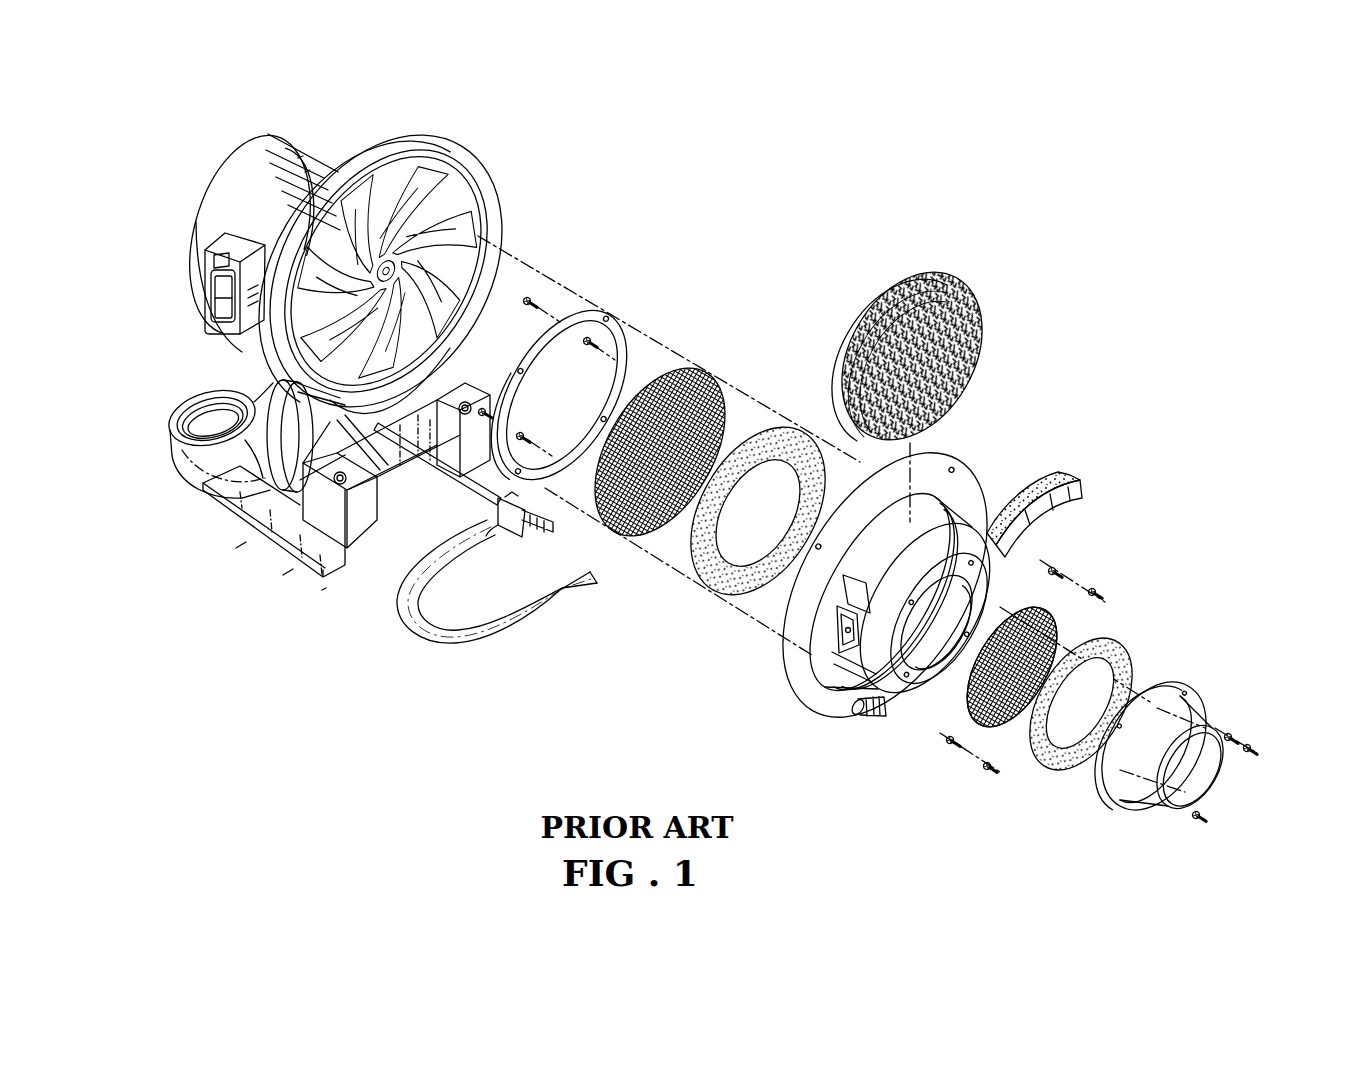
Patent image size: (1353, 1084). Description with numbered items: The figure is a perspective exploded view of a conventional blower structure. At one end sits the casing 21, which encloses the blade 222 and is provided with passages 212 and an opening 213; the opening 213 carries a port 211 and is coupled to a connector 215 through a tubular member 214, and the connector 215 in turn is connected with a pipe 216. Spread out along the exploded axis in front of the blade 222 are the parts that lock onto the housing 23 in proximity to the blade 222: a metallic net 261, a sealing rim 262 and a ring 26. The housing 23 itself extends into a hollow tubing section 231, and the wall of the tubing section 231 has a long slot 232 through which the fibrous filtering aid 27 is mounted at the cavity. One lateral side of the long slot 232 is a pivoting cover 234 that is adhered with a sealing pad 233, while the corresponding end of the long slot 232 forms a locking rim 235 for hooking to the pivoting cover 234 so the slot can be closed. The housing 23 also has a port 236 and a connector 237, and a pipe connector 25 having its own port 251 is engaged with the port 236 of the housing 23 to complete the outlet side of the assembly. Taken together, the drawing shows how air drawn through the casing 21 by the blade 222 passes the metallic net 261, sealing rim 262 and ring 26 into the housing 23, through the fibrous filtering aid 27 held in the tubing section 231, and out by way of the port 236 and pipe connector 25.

The casing 21 is at (443, 150).
The port 211 is at (203, 392).
The passages 212 is at (448, 342).
The opening 213 is at (433, 377).
The tubular member 214 is at (460, 485).
The connector 215 is at (517, 540).
The pipe 216 is at (433, 632).
The blade 222 is at (457, 218).
The ring 26 is at (613, 312).
The metallic net 261 is at (705, 368).
The sealing rim 262 is at (712, 596).
The fibrous filtering aid 27 is at (937, 275).
The housing 23 is at (818, 695).
The hollow tubing section 231 is at (853, 667).
The long slot 232 is at (927, 502).
The sealing pad 233 is at (1024, 507).
The pivoting cover 234 is at (1068, 522).
The locking rim 235 is at (837, 637).
The port 236 is at (912, 655).
The connector 237 is at (892, 700).
The pipe connector 25 is at (1123, 797).
The port 251 is at (1198, 780).